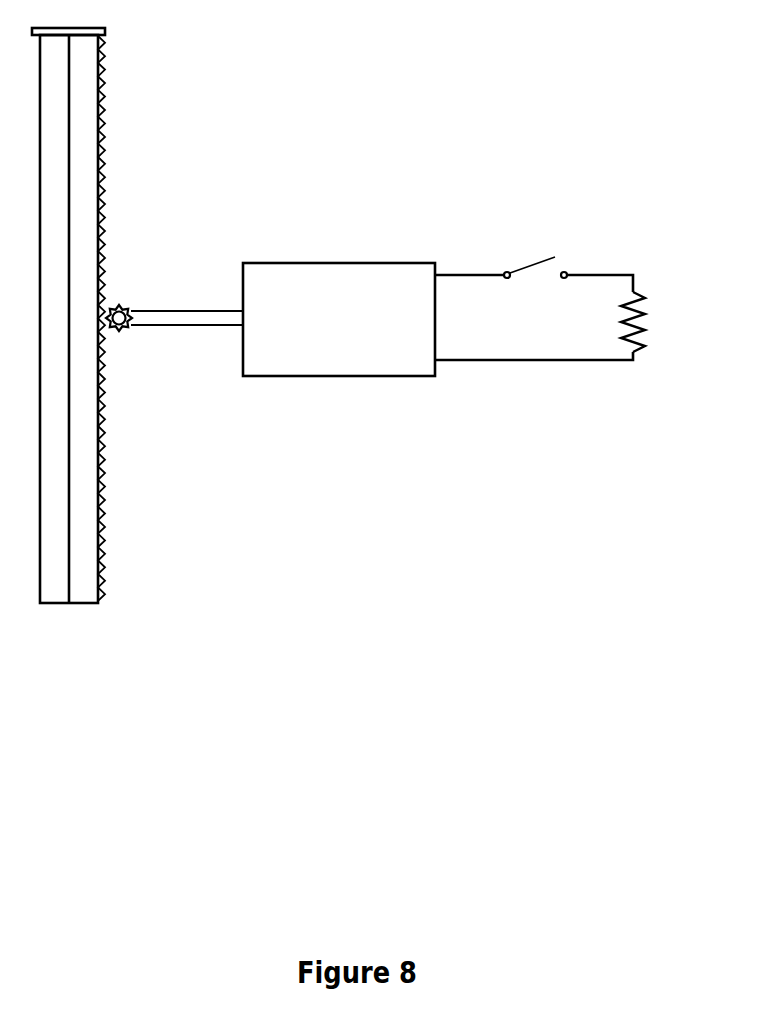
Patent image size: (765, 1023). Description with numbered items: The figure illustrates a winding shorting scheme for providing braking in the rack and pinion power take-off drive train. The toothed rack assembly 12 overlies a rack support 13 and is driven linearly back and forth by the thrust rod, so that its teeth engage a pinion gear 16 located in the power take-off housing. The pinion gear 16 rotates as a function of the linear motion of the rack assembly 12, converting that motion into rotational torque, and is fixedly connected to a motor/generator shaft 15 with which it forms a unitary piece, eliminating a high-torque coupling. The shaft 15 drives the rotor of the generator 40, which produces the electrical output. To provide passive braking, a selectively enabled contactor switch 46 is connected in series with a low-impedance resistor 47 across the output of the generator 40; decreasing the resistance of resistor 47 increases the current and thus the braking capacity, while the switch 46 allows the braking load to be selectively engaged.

The rack assembly 12 is at (105, 210).
The rack support 13 is at (68, 200).
The motor/generator shaft 15 is at (172, 312).
The pinion gear 16 is at (124, 332).
The generator 40 is at (355, 268).
The contactor switch 46 is at (555, 257).
The resistor 47 is at (617, 328).